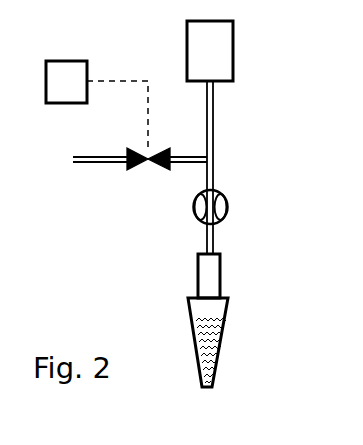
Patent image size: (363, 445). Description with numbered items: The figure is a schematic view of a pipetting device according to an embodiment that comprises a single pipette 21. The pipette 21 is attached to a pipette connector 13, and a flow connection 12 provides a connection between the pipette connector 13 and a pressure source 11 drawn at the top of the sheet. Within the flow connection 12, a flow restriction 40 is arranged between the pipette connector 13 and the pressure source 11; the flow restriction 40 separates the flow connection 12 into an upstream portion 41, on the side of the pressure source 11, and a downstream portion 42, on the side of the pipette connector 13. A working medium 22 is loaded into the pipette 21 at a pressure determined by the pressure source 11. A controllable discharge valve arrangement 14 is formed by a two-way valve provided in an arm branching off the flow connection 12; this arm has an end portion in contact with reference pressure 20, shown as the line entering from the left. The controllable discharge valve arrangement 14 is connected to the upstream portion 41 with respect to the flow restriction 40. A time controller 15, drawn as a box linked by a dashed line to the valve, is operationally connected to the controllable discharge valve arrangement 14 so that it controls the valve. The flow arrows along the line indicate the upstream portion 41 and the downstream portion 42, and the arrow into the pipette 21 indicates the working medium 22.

The pressure source 11 is at (220, 66).
The flow connection 12 is at (213, 123).
The pipette connector 13 is at (220, 278).
The controllable discharge valve arrangement 14 is at (137, 171).
The time controller 15 is at (76, 90).
The reference pressure 20 is at (56, 173).
The pipette 21 is at (219, 345).
The working medium 22 is at (217, 291).
The flow restriction 40 is at (225, 193).
The upstream portion 41 is at (224, 145).
The downstream portion 42 is at (224, 234).